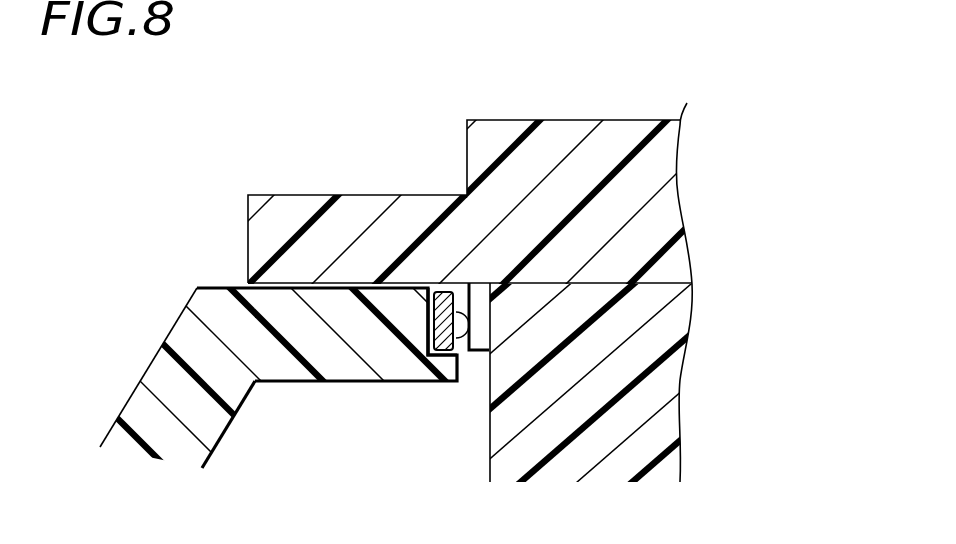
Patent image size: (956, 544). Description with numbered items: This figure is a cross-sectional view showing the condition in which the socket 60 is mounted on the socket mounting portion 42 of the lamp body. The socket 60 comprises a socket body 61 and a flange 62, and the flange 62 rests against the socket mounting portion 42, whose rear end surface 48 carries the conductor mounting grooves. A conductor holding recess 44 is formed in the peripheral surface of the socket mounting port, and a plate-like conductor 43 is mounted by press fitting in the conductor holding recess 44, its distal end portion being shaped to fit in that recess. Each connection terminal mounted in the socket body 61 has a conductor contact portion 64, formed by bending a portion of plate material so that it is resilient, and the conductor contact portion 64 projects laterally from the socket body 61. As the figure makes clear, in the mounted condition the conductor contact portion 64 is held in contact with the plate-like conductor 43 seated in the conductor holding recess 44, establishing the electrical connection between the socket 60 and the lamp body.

The socket mounting portion 42 is at (158, 352).
The plate-like conductor 43 is at (430, 340).
The conductor holding recess 44 is at (433, 322).
The rear end surface 48 is at (222, 288).
The socket 60 is at (407, 126).
The socket body 61 is at (650, 418).
The flange 62 is at (355, 194).
The conductor contact portion 64 is at (477, 351).